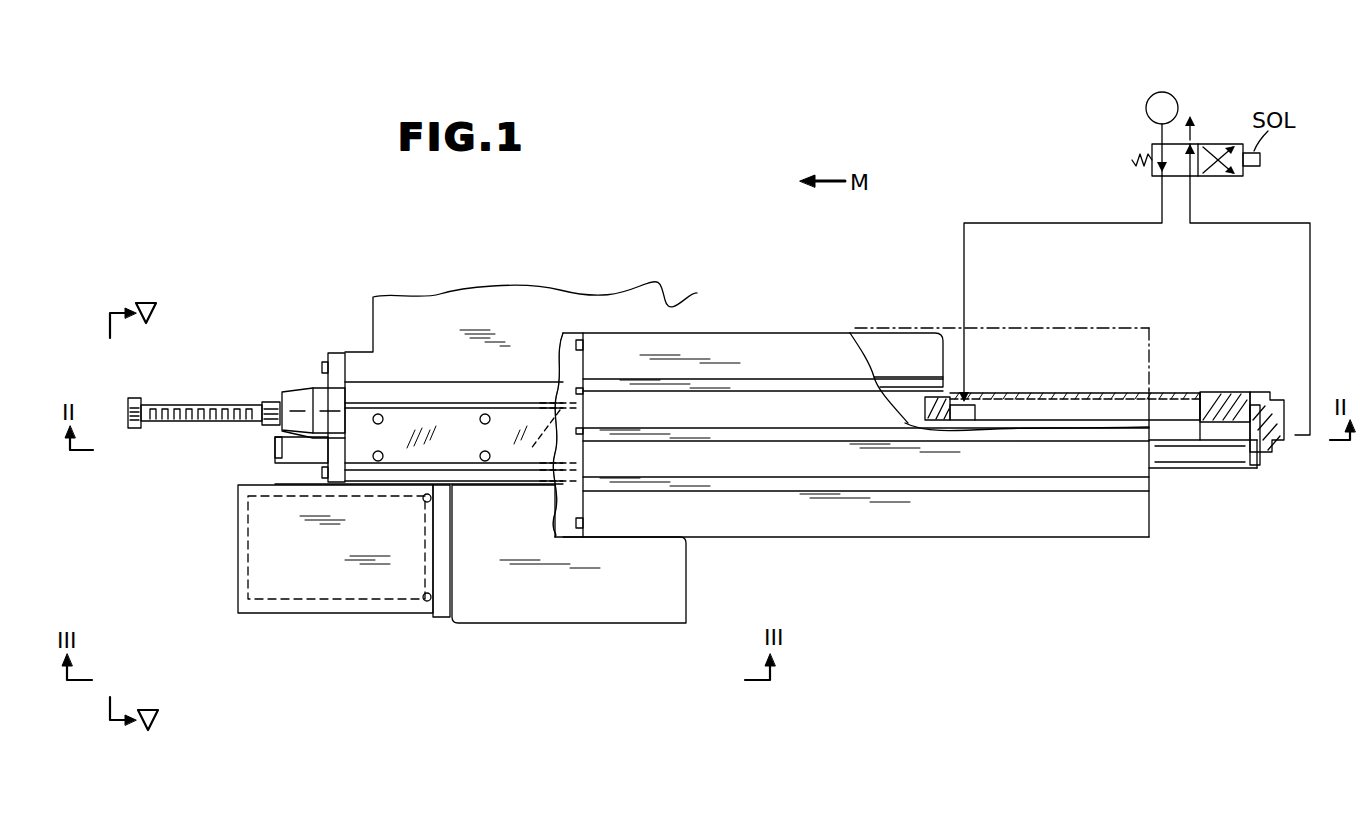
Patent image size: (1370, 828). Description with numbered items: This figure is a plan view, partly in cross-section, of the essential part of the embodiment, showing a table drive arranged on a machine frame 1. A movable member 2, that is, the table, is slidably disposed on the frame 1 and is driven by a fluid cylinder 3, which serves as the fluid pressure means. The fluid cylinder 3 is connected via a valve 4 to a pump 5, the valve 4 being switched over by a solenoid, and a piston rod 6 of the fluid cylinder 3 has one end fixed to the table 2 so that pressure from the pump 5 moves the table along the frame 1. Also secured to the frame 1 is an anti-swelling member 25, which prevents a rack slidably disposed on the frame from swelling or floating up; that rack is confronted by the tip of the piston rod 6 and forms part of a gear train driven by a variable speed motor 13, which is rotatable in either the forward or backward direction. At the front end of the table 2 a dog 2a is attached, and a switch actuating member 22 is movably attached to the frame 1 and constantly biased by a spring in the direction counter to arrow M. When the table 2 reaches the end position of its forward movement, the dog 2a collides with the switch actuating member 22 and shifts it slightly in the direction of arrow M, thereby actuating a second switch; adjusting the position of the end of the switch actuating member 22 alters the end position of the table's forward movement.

The machine frame 1 is at (702, 333).
The movable member 2 is at (984, 521).
The dog 2a is at (558, 434).
The fluid cylinder 3 is at (1222, 478).
The valve 4 is at (1213, 138).
The pump 5 is at (1162, 93).
The piston rod 6 is at (1052, 402).
The variable speed motor 13 is at (318, 600).
The switch actuating member 22 is at (215, 406).
The anti-swelling member 25 is at (434, 422).